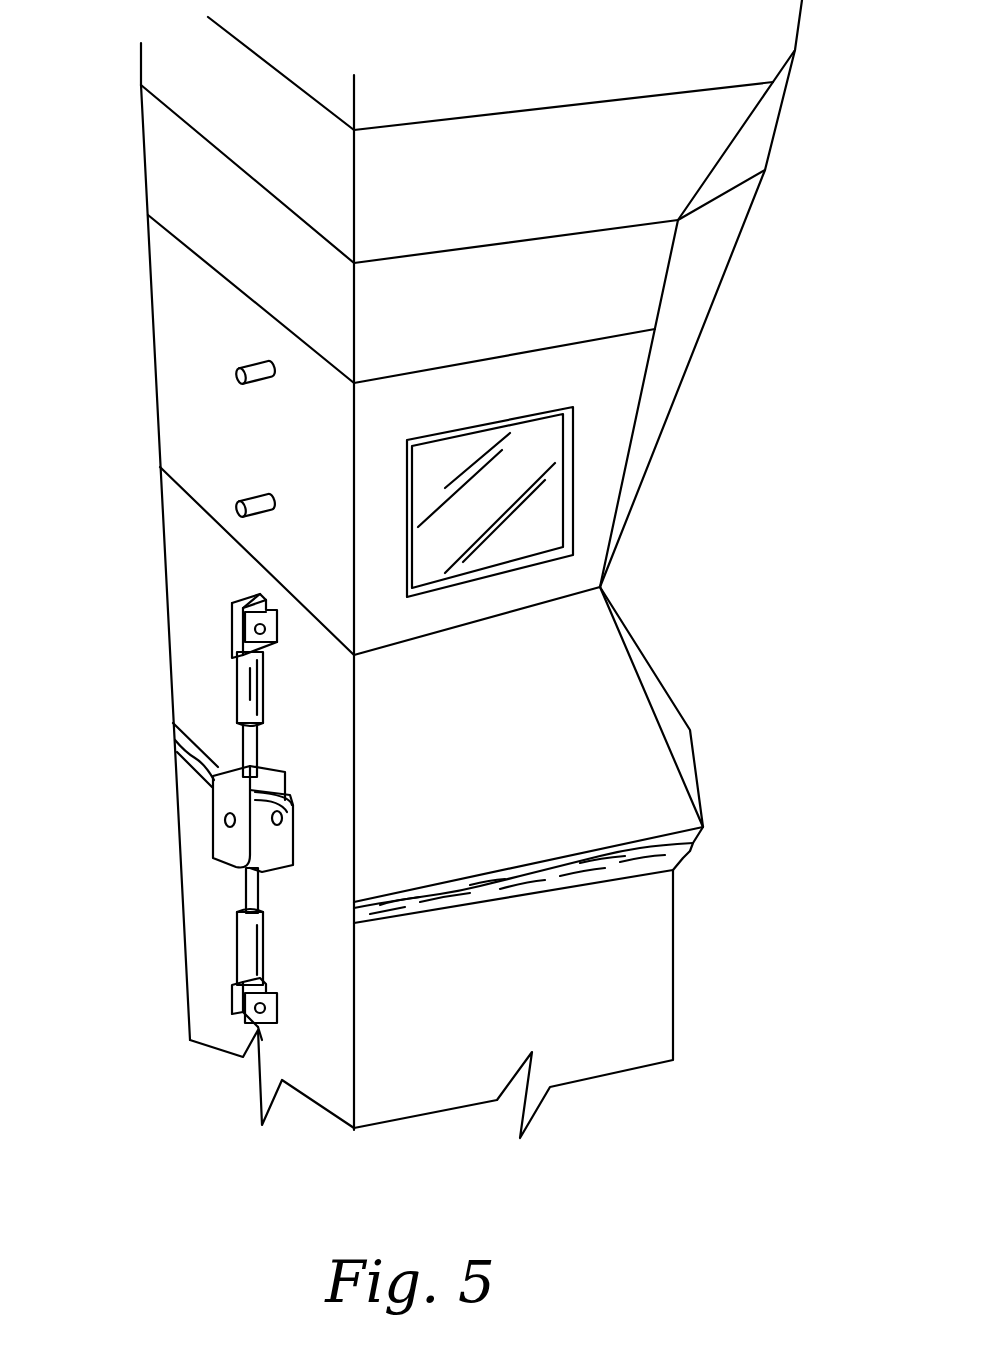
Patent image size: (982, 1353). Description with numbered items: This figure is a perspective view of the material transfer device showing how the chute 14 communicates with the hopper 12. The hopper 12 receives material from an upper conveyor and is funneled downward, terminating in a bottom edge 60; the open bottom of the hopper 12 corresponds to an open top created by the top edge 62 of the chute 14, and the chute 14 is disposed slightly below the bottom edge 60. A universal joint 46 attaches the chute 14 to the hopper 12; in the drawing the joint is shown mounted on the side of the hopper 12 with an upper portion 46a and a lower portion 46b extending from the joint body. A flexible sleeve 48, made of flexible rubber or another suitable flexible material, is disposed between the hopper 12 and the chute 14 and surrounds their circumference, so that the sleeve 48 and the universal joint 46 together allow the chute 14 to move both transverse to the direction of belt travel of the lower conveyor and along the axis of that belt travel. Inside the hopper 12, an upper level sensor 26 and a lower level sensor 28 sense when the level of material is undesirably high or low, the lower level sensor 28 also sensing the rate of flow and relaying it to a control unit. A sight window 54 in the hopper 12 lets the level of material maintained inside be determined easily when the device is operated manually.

The hopper 12 is at (703, 332).
The chute 14 is at (680, 990).
The upper level sensor 26 is at (255, 365).
The lower level sensor 28 is at (257, 493).
The universal joint 46 is at (222, 817).
The upper actuator rod 46a is at (239, 693).
The lower actuator rod 46b is at (238, 923).
The flexible sleeve 48 is at (695, 850).
The sight window 54 is at (545, 500).
The bottom edge 60 is at (172, 713).
The top edge 62 is at (172, 753).